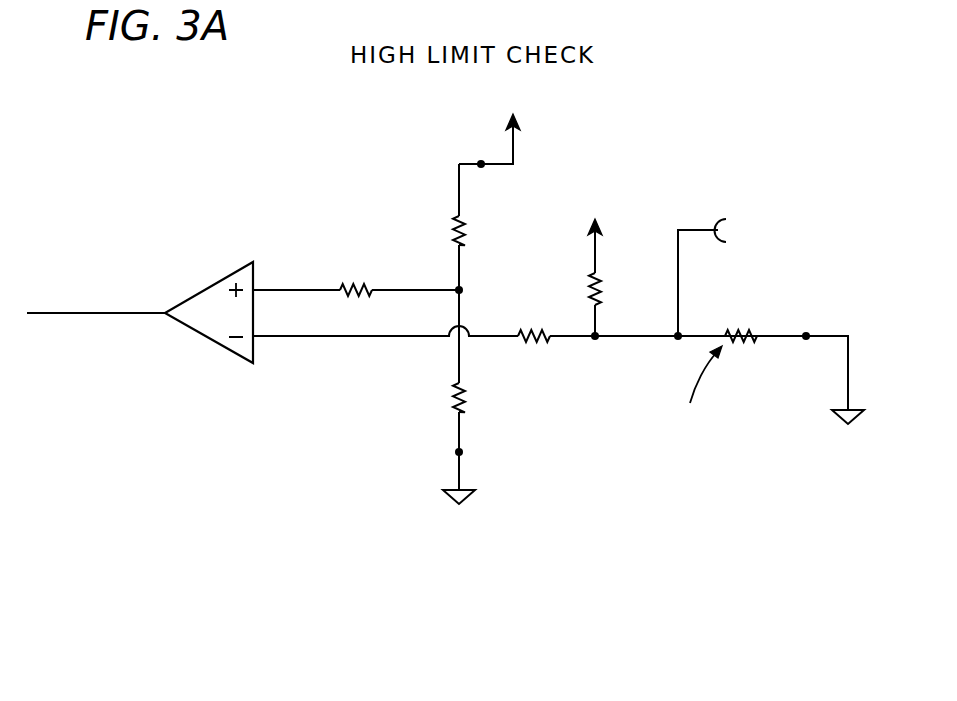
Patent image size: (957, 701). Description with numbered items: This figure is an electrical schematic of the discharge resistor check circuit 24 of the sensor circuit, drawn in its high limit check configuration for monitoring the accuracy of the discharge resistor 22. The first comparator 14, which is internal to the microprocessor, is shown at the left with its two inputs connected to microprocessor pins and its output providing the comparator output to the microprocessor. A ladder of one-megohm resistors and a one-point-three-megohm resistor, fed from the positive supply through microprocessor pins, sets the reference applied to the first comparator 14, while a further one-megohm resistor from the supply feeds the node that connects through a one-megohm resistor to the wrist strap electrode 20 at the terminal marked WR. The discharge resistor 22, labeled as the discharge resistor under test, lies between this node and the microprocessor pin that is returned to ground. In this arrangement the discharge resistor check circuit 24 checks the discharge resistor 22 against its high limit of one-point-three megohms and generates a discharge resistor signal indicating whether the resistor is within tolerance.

The first comparator 14 is at (213, 263).
The electrode 20 is at (780, 230).
The discharge resistor 22 is at (750, 338).
The discharge resistor check circuit 24 is at (730, 103).